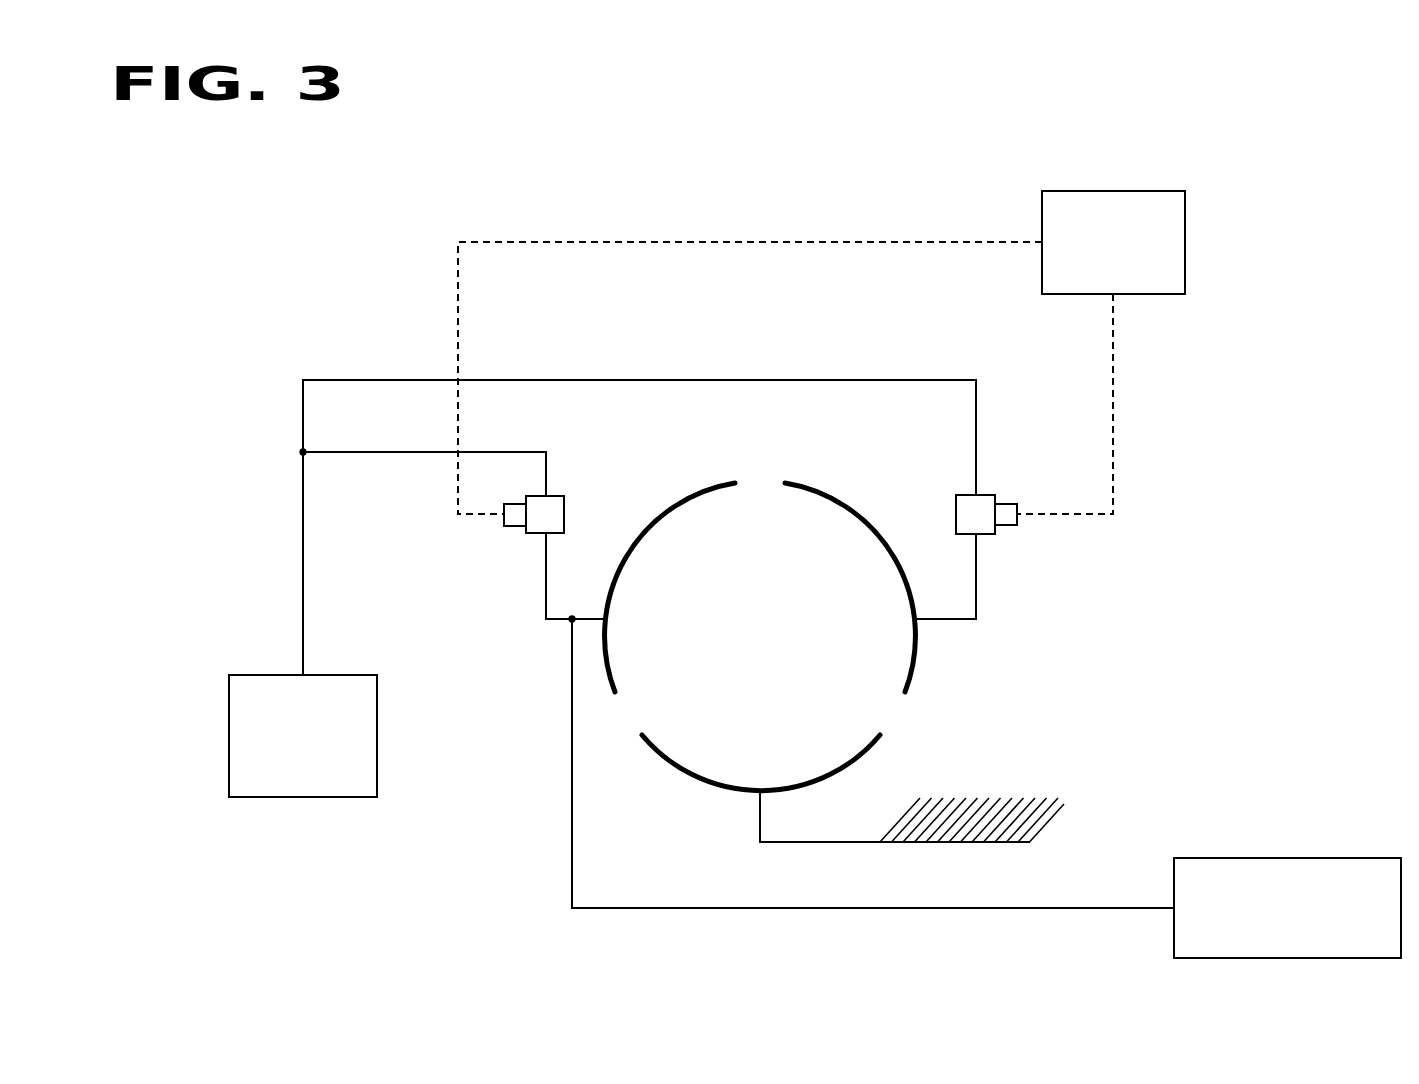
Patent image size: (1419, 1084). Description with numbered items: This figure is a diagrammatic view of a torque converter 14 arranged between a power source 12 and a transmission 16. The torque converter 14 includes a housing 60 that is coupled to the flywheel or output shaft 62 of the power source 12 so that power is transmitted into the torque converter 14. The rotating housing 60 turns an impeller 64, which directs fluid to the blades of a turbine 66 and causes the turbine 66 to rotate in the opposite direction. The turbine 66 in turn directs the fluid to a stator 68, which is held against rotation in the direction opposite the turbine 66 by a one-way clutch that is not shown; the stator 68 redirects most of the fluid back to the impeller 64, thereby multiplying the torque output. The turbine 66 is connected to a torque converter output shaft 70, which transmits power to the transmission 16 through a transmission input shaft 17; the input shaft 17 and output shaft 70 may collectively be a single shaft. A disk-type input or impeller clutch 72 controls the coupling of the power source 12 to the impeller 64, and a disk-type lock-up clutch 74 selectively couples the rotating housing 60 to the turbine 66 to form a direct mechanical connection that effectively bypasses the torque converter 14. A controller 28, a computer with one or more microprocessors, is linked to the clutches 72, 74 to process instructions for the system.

The power source 12 is at (316, 741).
The torque converter 14 is at (769, 617).
The transmission 16 is at (1303, 917).
The transmission input shaft 17 is at (1073, 908).
The controller 28 is at (1127, 248).
The housing 60 is at (303, 412).
The output shaft 62 is at (303, 552).
The impeller 64 is at (847, 507).
The turbine 66 is at (680, 500).
The stator 68 is at (853, 762).
The torque converter output shaft 70 is at (573, 758).
The impeller clutch 72 is at (982, 495).
The lock-up clutch 74 is at (523, 527).